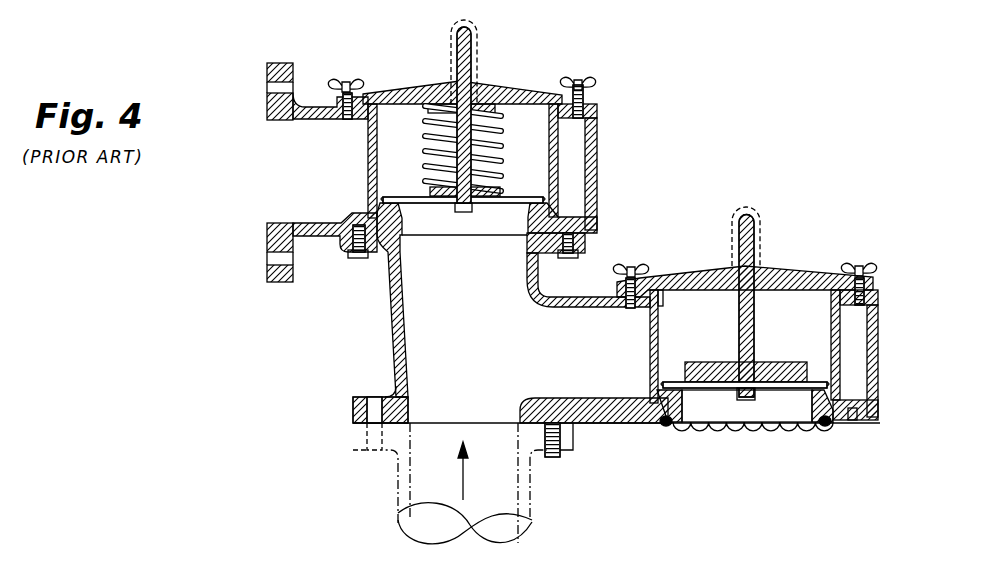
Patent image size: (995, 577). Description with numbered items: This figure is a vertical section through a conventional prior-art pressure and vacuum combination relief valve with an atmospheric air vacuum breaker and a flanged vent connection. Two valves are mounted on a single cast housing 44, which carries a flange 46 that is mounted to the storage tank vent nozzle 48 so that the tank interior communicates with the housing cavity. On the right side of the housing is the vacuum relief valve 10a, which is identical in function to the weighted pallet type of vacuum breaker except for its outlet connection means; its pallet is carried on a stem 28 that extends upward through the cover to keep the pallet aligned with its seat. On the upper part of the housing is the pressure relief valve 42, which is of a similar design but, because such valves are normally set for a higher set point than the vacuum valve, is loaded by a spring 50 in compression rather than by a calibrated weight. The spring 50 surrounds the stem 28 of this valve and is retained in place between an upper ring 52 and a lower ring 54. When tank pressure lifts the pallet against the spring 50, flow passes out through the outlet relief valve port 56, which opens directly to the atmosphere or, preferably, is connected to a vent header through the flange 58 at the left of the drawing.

The vacuum relief valve 10a is at (875, 243).
The stem 28 is at (465, 80).
The pressure relief valve 42 is at (597, 126).
The cast housing 44 is at (484, 341).
The flange 46 is at (355, 400).
The storage tank vent nozzle 48 is at (398, 483).
The spring 50 is at (497, 172).
The upper ring 52 is at (482, 102).
The lower ring 54 is at (487, 203).
The outlet relief valve port 56 is at (267, 207).
The flange 58 is at (267, 283).